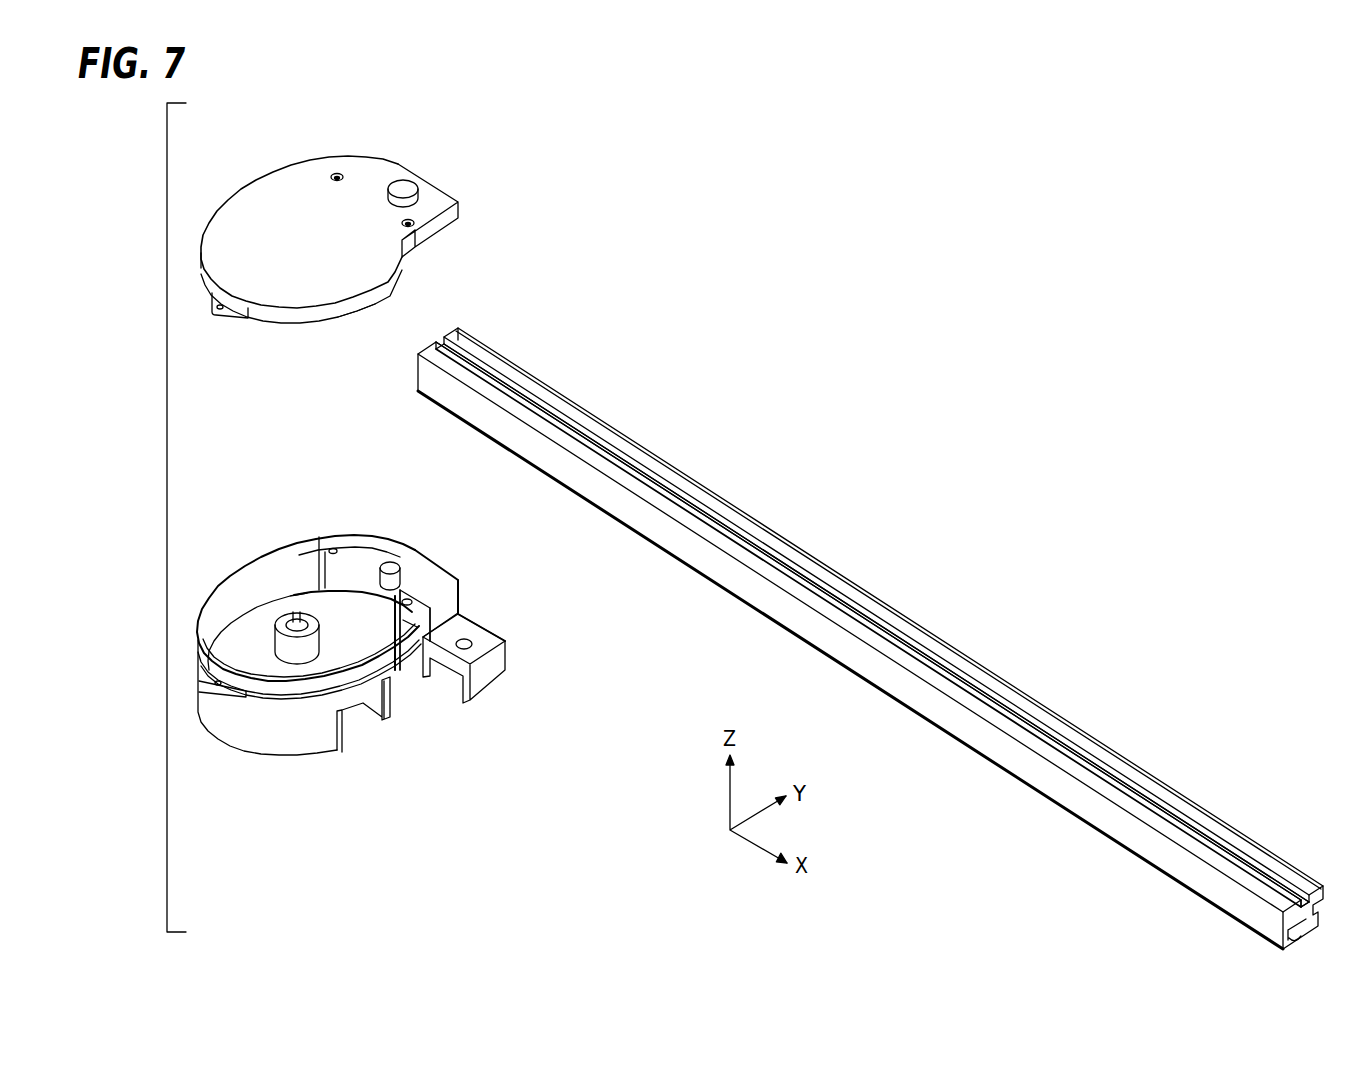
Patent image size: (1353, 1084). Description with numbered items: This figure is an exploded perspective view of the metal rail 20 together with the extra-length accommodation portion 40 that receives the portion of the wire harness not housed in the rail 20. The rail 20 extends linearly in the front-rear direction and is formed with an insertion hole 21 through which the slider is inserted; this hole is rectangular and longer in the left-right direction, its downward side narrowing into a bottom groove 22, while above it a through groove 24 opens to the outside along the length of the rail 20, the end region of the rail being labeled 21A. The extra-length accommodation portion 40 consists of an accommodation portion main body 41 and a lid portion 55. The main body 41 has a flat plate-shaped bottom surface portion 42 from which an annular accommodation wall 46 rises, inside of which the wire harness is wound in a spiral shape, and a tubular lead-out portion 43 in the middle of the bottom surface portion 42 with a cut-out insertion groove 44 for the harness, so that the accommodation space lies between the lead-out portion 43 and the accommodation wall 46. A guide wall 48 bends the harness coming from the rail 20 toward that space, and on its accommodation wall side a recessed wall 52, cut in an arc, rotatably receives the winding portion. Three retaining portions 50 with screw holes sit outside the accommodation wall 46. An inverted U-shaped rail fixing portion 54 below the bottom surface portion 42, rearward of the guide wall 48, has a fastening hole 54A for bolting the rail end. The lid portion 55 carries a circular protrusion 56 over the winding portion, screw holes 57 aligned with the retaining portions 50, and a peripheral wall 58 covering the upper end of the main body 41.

The rail 20 is at (846, 542).
The insertion hole 21 is at (887, 638).
The rail lip portion 21A is at (1302, 895).
The bottom groove 22 is at (1290, 932).
The through groove 24 is at (1031, 722).
The extra-length accommodation portion 40 is at (241, 398).
The accommodation portion main body 41 is at (325, 507).
The bottom surface portion 42 is at (362, 660).
The lead-out portion 43 is at (294, 655).
The insertion groove 44 is at (294, 616).
The accommodation wall 46 is at (403, 625).
The guide wall 48 is at (418, 561).
The retaining portion 50 is at (336, 549).
The recessed wall 52 is at (418, 572).
The rail fixing portion 54 is at (485, 642).
The fastening hole 54A is at (466, 642).
The lid portion 55 is at (320, 336).
The protrusion 56 is at (406, 188).
The screw hole 57 is at (337, 172).
The peripheral wall 58 is at (357, 306).